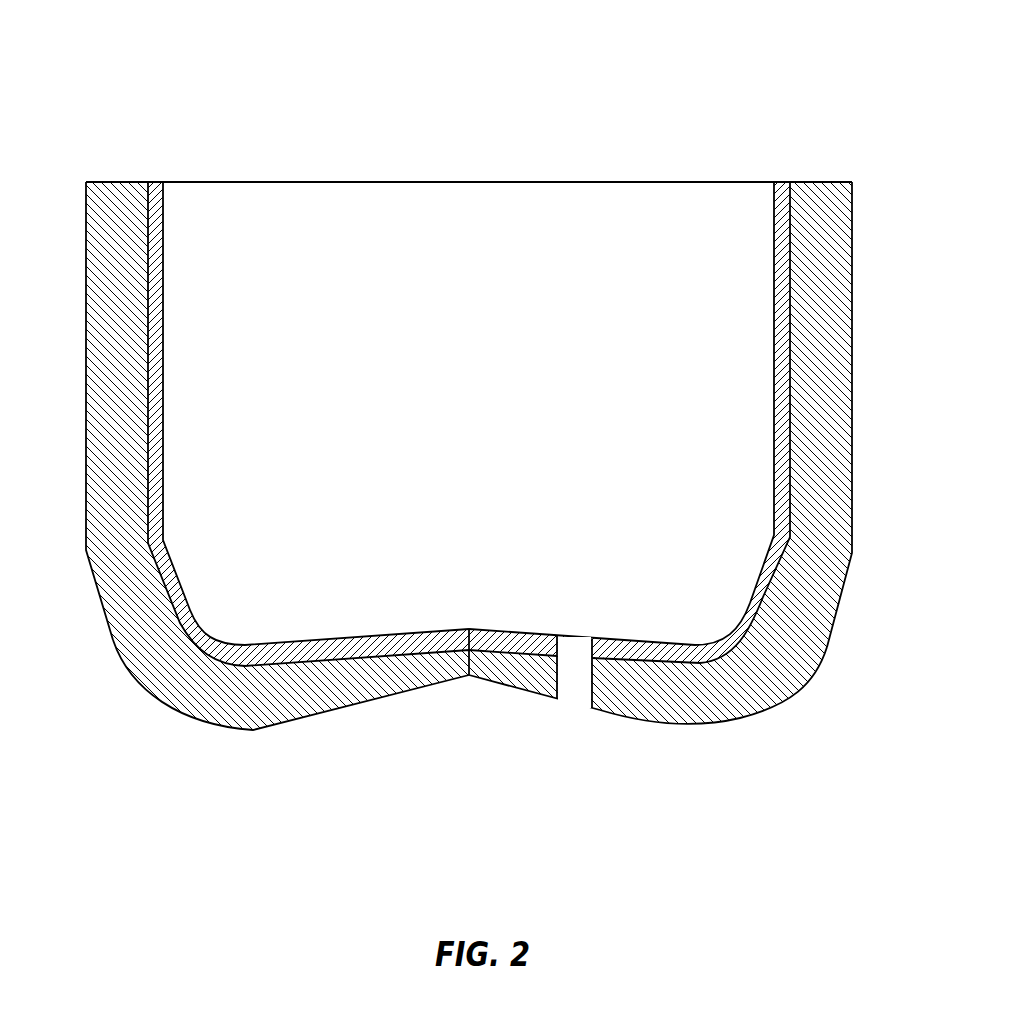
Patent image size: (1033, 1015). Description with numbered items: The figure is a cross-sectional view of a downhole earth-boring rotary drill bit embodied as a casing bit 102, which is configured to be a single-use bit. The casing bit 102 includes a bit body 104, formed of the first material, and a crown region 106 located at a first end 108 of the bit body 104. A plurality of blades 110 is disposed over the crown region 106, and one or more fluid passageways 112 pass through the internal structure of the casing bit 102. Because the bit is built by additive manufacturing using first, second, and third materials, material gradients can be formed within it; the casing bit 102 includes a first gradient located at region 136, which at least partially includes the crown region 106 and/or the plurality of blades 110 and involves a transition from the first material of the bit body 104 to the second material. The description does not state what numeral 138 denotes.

The casing bit 102 is at (488, 436).
The bit body 104 is at (828, 285).
The crown region 106 is at (110, 682).
The first end 108 is at (163, 746).
The plurality of blades 110 is at (740, 718).
The fluid passageway 112 is at (575, 677).
The region 136 is at (152, 546).
The bottom portion 138 is at (542, 675).